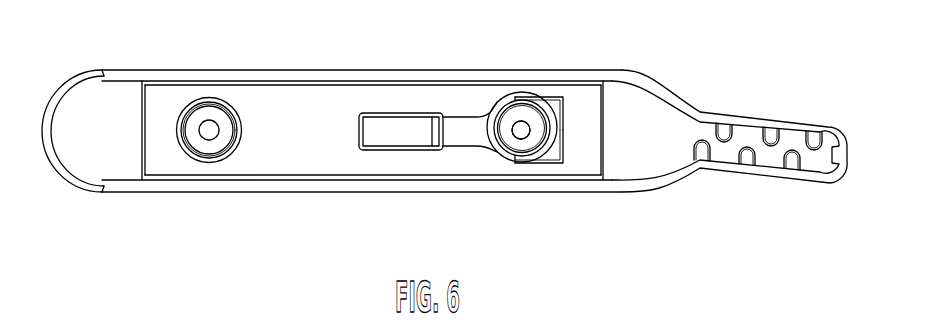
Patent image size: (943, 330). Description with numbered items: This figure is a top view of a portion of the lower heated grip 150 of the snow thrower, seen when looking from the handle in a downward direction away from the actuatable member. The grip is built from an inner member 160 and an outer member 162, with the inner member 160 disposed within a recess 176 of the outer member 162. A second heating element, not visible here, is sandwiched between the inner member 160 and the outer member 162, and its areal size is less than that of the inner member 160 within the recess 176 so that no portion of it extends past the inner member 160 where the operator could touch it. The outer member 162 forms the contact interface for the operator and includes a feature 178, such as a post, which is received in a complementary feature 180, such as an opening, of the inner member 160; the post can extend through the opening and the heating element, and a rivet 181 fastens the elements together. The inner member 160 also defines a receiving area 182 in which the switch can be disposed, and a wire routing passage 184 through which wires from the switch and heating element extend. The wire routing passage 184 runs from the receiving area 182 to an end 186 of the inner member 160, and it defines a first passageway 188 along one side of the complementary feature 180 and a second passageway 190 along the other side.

The lower heated grip 150 is at (105, 70).
The inner member 160 is at (174, 163).
The outer member 162 is at (273, 185).
The recess 176 is at (632, 170).
The feature 178 is at (520, 143).
The complementary feature 180 is at (570, 122).
The rivet 181 is at (530, 132).
The receiving area 182 is at (400, 117).
The wire routing passage 184 is at (470, 122).
The end 186 is at (595, 118).
The first passageway 188 is at (552, 96).
The second passageway 190 is at (552, 163).